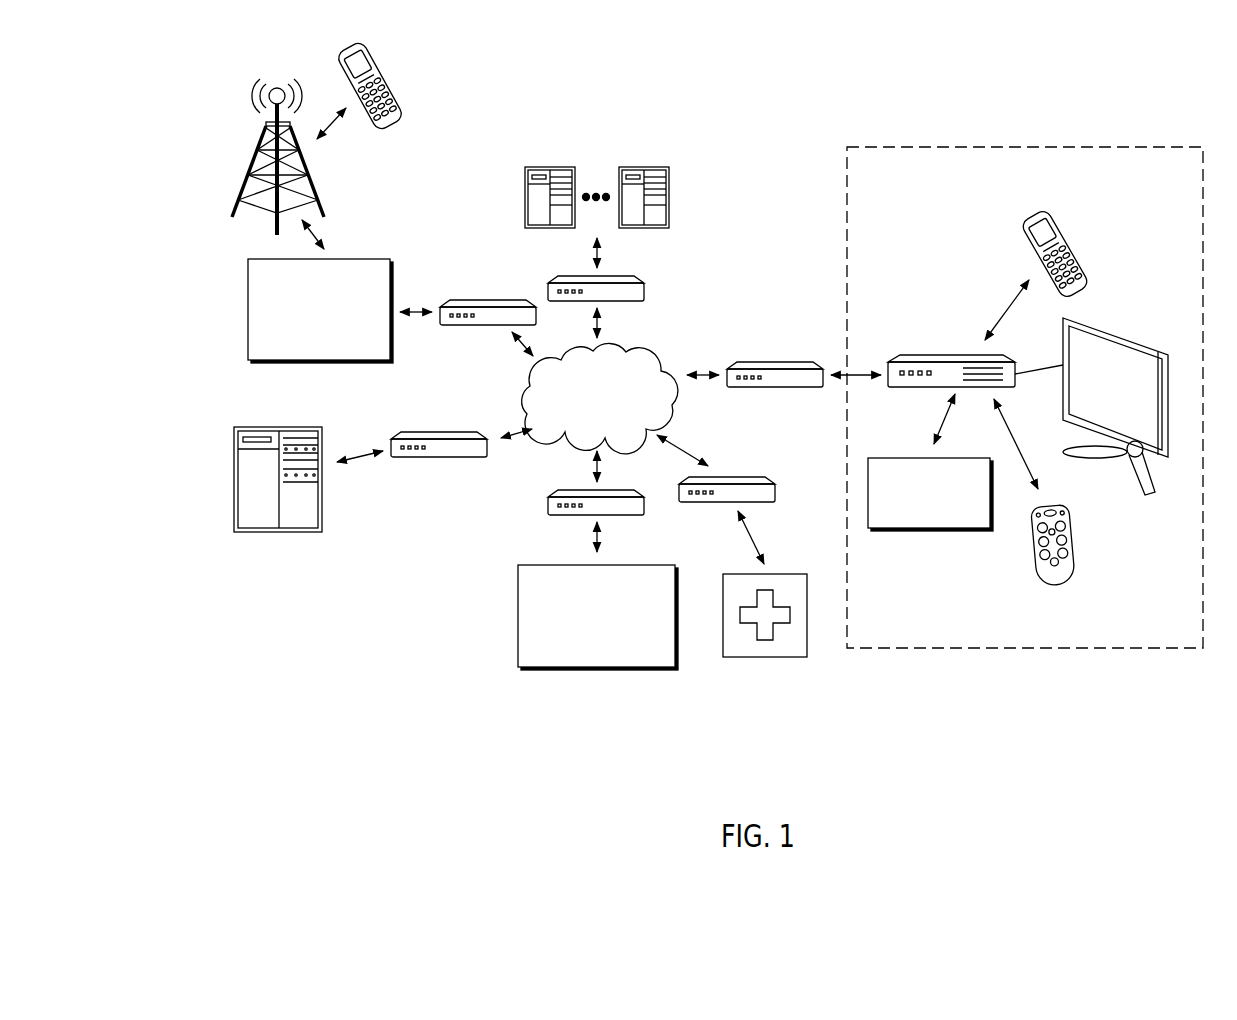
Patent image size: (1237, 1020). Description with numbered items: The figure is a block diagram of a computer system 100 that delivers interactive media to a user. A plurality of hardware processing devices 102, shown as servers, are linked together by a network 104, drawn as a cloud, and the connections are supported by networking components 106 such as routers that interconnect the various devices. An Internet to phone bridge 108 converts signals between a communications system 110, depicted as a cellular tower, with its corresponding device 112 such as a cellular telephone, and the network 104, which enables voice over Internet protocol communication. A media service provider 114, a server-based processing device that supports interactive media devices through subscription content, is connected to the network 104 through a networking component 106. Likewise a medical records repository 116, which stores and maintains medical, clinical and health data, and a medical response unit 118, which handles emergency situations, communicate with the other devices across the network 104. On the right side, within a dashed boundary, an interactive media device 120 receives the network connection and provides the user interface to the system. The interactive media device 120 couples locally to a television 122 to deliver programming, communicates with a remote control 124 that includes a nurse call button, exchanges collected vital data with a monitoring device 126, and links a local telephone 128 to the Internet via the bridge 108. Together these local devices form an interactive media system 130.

The computer system 100 is at (819, 97).
The hardware processing device 102 is at (531, 167).
The network 104 is at (600, 398).
The networking component 106 is at (493, 300).
The Internet to phone bridge 108 is at (248, 288).
The communications system 110 is at (253, 161).
The device 112 is at (393, 130).
The media service provider 114 is at (272, 533).
The medical records repository 116 is at (568, 668).
The medical response unit 118 is at (757, 658).
The interactive media device 120 is at (930, 355).
The television 122 is at (1140, 335).
The remote control 124 is at (1072, 568).
The monitoring device 126 is at (922, 530).
The local telephone 128 is at (1022, 228).
The interactive media system 130 is at (1012, 650).